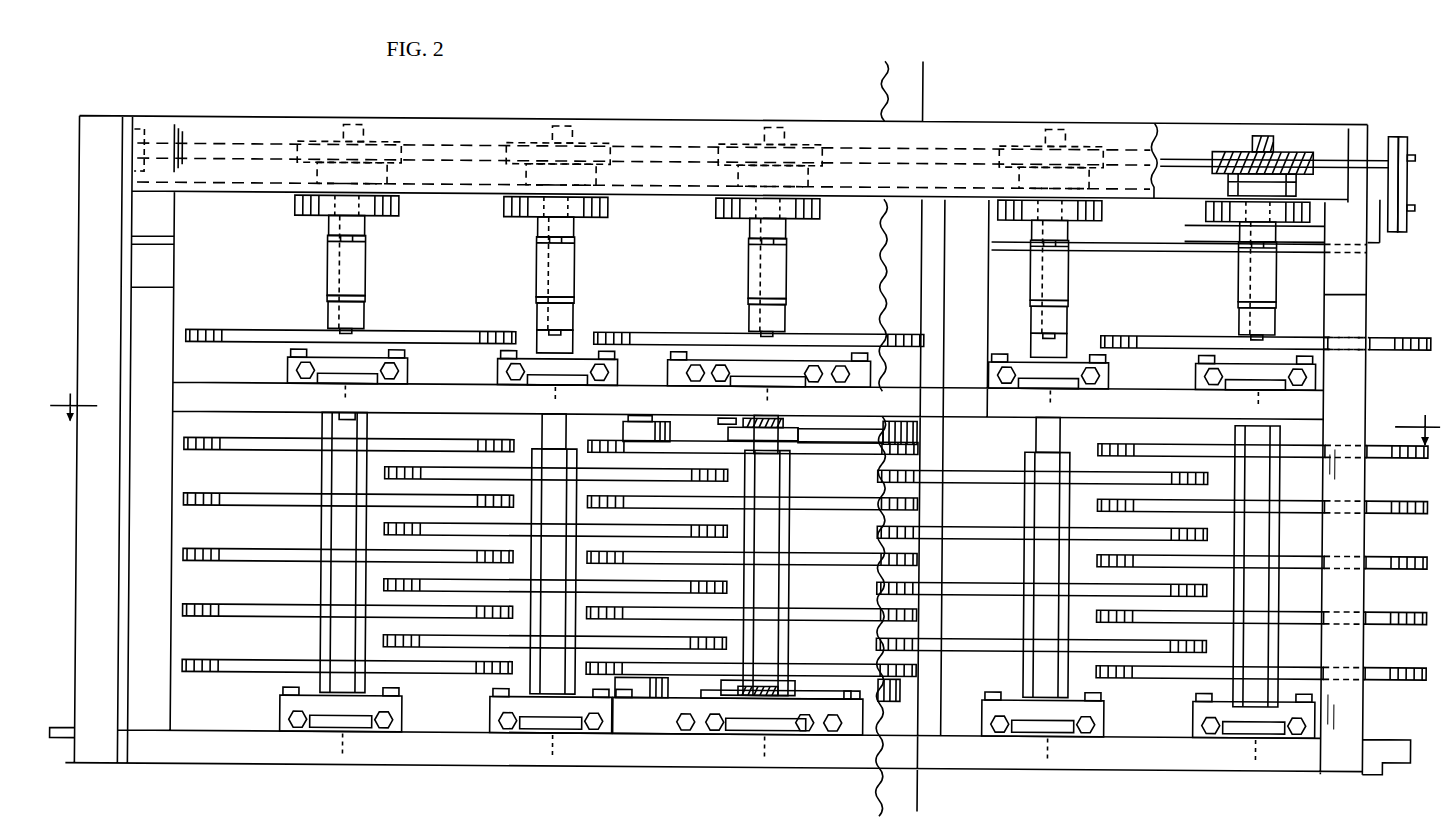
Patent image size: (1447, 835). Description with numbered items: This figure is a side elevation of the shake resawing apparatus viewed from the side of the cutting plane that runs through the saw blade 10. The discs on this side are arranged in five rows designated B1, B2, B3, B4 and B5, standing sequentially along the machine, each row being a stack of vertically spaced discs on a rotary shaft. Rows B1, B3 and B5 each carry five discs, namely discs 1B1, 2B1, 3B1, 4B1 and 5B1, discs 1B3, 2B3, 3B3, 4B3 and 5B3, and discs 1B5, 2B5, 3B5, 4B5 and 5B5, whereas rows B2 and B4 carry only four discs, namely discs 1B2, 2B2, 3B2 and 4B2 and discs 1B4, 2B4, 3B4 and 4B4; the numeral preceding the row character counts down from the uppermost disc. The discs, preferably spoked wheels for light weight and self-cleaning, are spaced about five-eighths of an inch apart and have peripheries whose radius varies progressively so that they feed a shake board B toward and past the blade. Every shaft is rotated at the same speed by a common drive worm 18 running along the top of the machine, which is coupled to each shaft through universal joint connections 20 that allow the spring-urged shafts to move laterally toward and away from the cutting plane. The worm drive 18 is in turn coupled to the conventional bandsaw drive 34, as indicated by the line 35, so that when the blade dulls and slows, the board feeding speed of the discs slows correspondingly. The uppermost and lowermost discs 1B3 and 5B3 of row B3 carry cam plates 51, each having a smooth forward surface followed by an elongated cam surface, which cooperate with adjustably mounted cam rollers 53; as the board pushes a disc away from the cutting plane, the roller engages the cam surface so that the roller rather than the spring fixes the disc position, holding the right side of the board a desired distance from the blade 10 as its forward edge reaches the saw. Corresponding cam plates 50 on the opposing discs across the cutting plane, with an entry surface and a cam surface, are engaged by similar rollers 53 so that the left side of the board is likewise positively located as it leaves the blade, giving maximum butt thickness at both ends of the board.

The saw blade 10 is at (925, 90).
The common drive worm 18 is at (1230, 146).
The universal joint connections 20 is at (343, 266).
The conventional bandsaw drive 34 is at (1192, 218).
The line 35 is at (1393, 132).
The cam plate 50 is at (664, 422).
The cam plate 51 is at (892, 440).
The cam roller 53 is at (798, 420).
The shake board B is at (1392, 330).
The row of discs B1 is at (350, 463).
The row of discs B2 is at (602, 314).
The row of discs B3 is at (800, 314).
The row of discs B4 is at (1082, 330).
The row of discs B5 is at (1290, 322).
The disc 1B1 is at (258, 450).
The disc 2B1 is at (253, 508).
The disc 3B1 is at (251, 563).
The disc 4B1 is at (249, 617).
The disc 5B1 is at (252, 673).
The disc 1B2 is at (460, 468).
The disc 2B2 is at (385, 530).
The disc 3B2 is at (385, 587).
The disc 4B2 is at (385, 643).
The disc 1B3 is at (908, 448).
The disc 2B3 is at (846, 498).
The disc 3B3 is at (846, 553).
The disc 4B3 is at (846, 608).
The disc 5B3 is at (846, 663).
The disc 1B4 is at (1010, 471).
The disc 2B4 is at (996, 526).
The disc 3B4 is at (996, 583).
The disc 4B4 is at (996, 640).
The disc 1B5 is at (1418, 456).
The disc 2B5 is at (1420, 513).
The disc 3B5 is at (1420, 568).
The disc 4B5 is at (1420, 623).
The disc 5B5 is at (1420, 681).